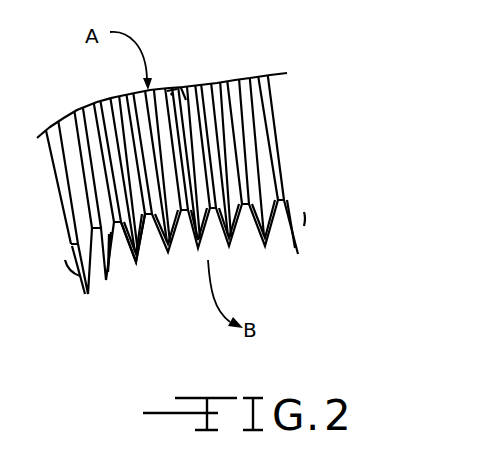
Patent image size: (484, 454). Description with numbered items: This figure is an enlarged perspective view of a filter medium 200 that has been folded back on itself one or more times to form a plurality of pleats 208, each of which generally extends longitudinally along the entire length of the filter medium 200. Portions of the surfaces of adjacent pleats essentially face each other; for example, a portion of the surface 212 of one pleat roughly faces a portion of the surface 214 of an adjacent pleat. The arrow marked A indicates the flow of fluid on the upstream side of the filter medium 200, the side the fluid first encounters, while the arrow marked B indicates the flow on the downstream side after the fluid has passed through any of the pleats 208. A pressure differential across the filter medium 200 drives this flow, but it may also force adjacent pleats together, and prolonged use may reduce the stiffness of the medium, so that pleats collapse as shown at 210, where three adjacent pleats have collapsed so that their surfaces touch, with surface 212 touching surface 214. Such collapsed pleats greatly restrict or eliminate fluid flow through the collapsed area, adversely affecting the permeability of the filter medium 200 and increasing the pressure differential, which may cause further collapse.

The filter medium 200 is at (236, 173).
The pleats 208 is at (229, 250).
The collapsed pleats 210 is at (136, 276).
The surface of one pleat 212 is at (172, 92).
The surface of adjacent pleat 214 is at (186, 93).